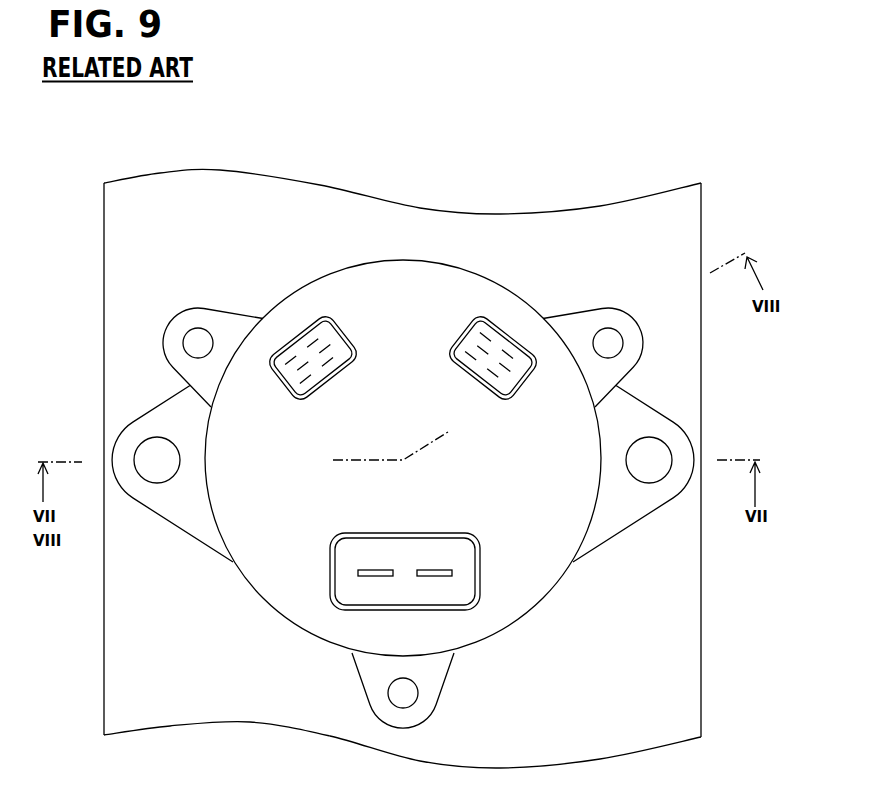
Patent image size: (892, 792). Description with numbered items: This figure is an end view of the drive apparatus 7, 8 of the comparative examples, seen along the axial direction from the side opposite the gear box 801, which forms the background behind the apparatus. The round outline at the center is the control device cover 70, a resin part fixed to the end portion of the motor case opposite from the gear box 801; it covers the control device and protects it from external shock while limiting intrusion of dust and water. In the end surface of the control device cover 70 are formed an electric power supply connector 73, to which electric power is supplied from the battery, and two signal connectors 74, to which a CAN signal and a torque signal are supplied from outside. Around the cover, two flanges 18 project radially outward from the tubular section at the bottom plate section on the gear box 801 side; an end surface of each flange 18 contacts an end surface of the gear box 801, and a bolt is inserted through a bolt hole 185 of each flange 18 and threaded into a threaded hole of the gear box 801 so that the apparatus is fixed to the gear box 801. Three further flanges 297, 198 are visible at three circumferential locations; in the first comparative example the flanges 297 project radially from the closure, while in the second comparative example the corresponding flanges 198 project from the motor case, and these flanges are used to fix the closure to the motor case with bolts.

The drive apparatus 7 is at (403, 409).
The drive apparatus 8 is at (403, 409).
The flange 18 is at (373, 445).
The control device cover 70 is at (411, 283).
The electric power supply connector 73 is at (421, 533).
The signal connector 74 is at (332, 388).
The bolt hole 185 is at (160, 472).
The flange 198 is at (585, 322).
The flange 297 is at (600, 285).
The gear box 801 is at (658, 677).